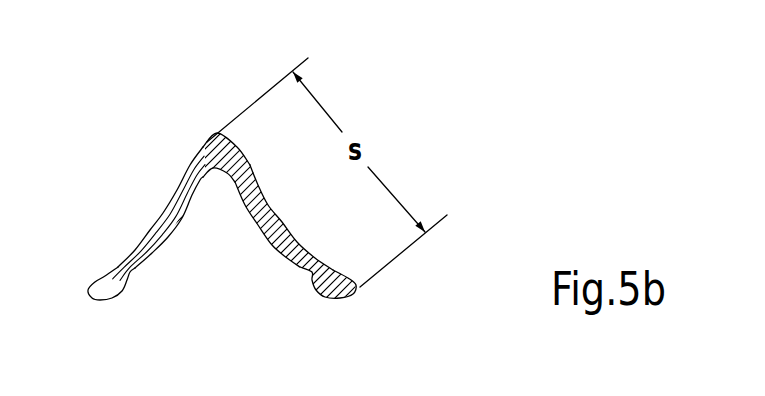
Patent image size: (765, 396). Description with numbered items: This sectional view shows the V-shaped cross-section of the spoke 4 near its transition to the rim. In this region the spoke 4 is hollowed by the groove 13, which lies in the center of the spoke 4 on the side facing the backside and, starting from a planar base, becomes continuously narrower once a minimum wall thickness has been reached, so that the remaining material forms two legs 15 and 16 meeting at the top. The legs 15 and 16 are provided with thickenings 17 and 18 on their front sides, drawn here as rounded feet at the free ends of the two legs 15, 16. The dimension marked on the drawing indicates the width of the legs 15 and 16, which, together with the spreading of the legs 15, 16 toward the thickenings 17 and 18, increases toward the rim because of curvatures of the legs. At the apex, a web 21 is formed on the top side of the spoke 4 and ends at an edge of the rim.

The spoke 4 is at (124, 149).
The groove 13 is at (207, 265).
The leg 15 is at (150, 230).
The leg 16 is at (278, 237).
The thickening 17 is at (98, 292).
The thickening 18 is at (340, 298).
The web 21 is at (207, 146).